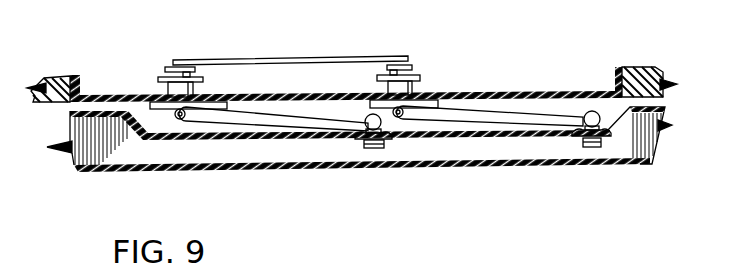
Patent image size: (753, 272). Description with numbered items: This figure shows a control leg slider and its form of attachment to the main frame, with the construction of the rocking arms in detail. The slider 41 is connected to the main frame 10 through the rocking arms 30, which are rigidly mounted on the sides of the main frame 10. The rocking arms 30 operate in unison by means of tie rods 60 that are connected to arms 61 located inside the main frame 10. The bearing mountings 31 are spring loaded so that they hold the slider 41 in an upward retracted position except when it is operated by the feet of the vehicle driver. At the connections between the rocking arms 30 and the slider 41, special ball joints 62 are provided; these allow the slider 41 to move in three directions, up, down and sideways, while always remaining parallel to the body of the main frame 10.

The main frame 10 is at (112, 96).
The rocking arms 30 is at (317, 142).
The bearing mountings 31 is at (183, 93).
The slider 41 is at (248, 140).
The tie rods 60 is at (292, 58).
The arms 61 is at (166, 67).
The ball joints 62 is at (376, 149).